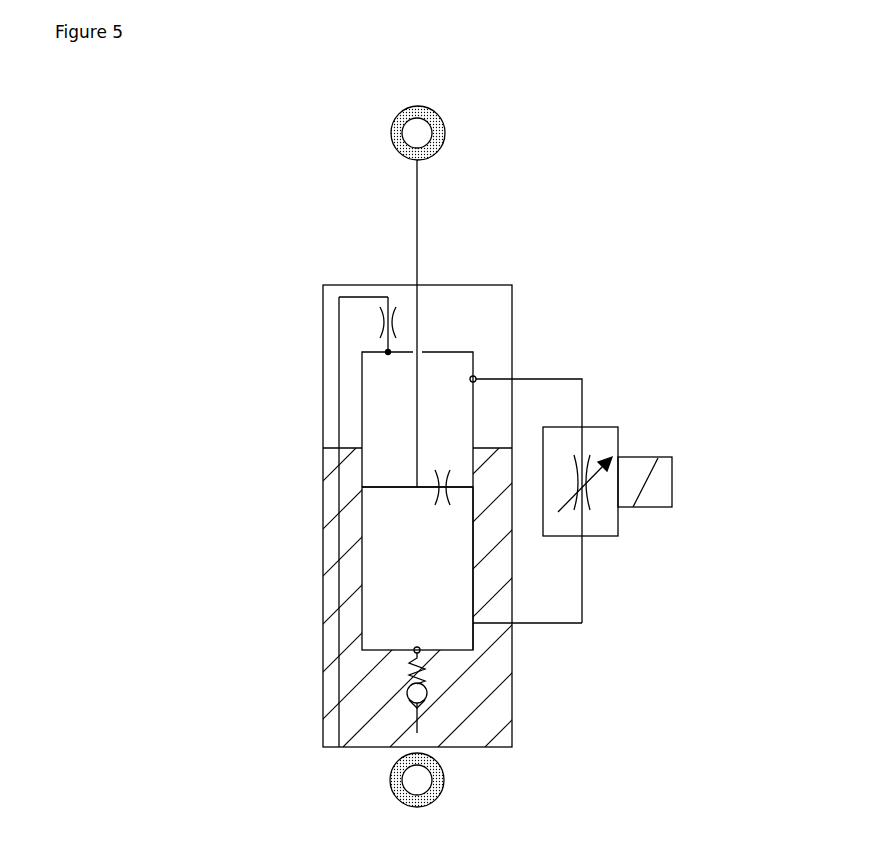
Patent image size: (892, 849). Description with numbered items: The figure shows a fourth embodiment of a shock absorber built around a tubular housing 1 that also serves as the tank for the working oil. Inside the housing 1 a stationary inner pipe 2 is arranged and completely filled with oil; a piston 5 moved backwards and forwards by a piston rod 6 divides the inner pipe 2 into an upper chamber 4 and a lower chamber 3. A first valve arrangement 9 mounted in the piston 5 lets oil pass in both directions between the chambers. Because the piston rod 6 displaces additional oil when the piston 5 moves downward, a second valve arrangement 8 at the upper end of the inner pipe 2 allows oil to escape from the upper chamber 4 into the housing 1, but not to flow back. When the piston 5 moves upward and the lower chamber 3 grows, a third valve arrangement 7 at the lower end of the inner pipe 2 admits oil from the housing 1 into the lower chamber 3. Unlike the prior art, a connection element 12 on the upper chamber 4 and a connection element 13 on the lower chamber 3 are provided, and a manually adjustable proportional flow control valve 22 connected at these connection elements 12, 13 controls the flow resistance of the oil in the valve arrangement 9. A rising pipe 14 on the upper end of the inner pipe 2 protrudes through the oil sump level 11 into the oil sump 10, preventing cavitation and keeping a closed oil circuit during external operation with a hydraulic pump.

The housing 1 is at (421, 519).
The inner pipe 2 is at (603, 588).
The lower chamber 3 is at (326, 582).
The upper chamber 4 is at (330, 393).
The piston 5 is at (340, 432).
The piston rod 6 is at (337, 296).
The third valve arrangement 7 is at (279, 727).
The second valve arrangement 8 is at (533, 271).
The first valve arrangement 9 is at (438, 491).
The oil sump 10 is at (259, 522).
The oil sump level 11 is at (281, 432).
The connection element 12 is at (577, 445).
The connection element 13 is at (592, 672).
The rising pipe 14 is at (261, 343).
The proportional flow control valve 22 is at (647, 448).